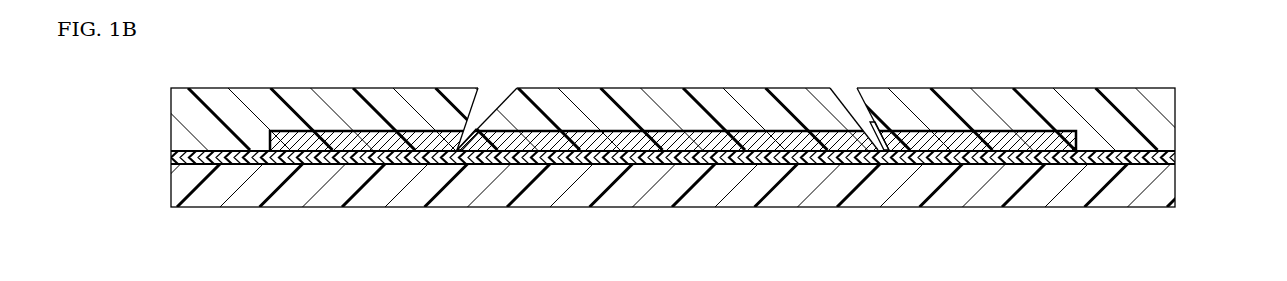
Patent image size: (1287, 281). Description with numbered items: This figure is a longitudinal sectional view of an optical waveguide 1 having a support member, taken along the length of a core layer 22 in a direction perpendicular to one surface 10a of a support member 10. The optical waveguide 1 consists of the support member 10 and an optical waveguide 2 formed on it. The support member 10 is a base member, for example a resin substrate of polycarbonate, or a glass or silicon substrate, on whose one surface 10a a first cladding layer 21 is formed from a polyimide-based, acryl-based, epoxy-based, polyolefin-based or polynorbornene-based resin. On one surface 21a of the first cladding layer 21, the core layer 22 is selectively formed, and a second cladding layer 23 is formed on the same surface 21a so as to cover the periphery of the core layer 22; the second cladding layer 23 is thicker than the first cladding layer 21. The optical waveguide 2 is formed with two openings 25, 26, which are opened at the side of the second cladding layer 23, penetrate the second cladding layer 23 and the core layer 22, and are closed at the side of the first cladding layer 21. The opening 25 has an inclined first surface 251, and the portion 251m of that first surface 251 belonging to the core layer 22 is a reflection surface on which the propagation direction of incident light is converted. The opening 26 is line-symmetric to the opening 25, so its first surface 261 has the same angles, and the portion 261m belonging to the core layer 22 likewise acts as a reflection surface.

The optical waveguide having a support member 1 is at (711, 116).
The optical waveguide 2 is at (701, 101).
The support member 10 is at (698, 116).
The one surface of the support member 10a is at (203, 164).
The first cladding layer 21 is at (696, 100).
The one surface of the first cladding layer 21a is at (257, 151).
The core layer 22 is at (1095, 145).
The second cladding layer 23 is at (1158, 120).
The opening 25 is at (497, 85).
The first surface 251 is at (503, 98).
The reflection surface 251m is at (458, 147).
The opening 26 is at (848, 85).
The first surface 261 is at (842, 98).
The reflection surface 261m is at (888, 148).